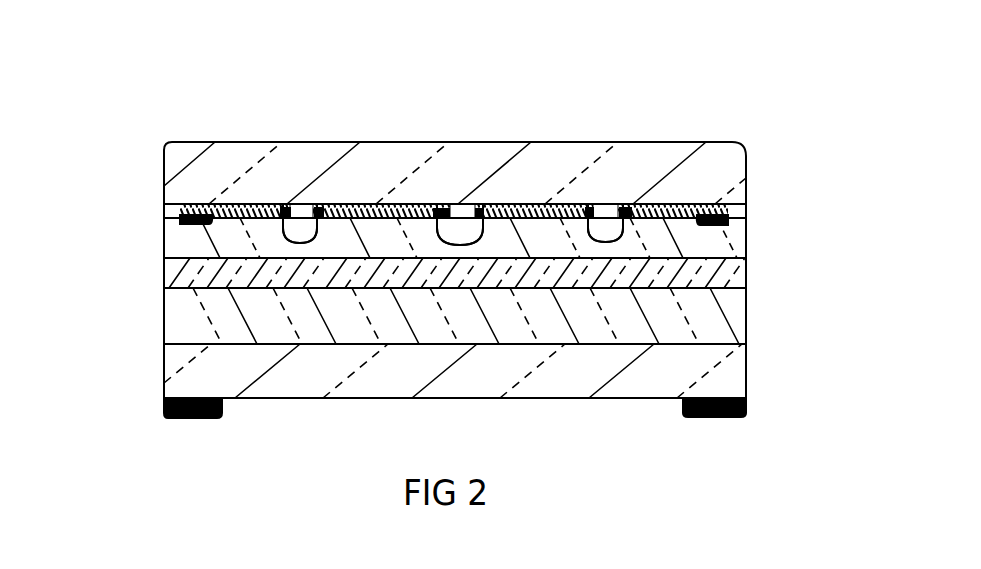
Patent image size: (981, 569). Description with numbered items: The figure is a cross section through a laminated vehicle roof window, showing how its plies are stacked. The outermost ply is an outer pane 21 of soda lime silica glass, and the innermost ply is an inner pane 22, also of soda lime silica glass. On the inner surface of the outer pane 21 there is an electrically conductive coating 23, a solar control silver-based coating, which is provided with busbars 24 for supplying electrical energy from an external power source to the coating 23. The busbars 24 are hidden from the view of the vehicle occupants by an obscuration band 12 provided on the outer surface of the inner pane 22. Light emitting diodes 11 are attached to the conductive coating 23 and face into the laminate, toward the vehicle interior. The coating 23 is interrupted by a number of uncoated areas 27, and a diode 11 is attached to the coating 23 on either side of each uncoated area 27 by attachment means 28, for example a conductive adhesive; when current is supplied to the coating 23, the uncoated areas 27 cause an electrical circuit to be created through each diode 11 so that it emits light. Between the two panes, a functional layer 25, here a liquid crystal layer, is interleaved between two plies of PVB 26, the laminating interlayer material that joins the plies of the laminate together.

The light emitting diodes 11 is at (300, 204).
The obscuration band 12 is at (185, 418).
The outer pane 21 is at (735, 156).
The inner pane 22 is at (176, 364).
The electrically conductive coating 23 is at (497, 213).
The busbars 24 is at (178, 218).
The functional layer 25 is at (732, 270).
The plies of laminating interlayer material 26 is at (187, 325).
The uncoated areas 27 is at (305, 232).
The attachment means 28 is at (282, 215).